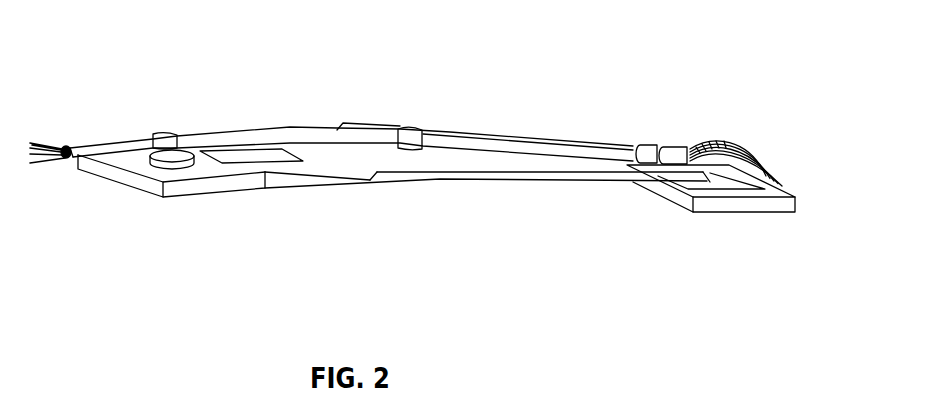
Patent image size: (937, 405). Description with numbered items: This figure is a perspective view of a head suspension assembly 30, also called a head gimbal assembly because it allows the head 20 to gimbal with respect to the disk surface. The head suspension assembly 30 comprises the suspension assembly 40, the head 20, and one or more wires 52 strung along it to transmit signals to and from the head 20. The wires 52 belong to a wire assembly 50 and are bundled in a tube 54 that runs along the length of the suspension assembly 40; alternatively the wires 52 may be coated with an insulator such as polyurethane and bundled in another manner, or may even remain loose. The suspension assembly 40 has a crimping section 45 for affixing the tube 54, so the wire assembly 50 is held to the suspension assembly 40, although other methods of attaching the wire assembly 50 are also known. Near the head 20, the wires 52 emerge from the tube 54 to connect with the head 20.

The head 20 is at (717, 213).
The head suspension assembly 30 is at (215, 253).
The suspension assembly 40 is at (512, 183).
The crimping section 45 is at (398, 128).
The wire assembly 50 is at (277, 128).
The wires 52 is at (745, 147).
The tube 54 is at (672, 148).